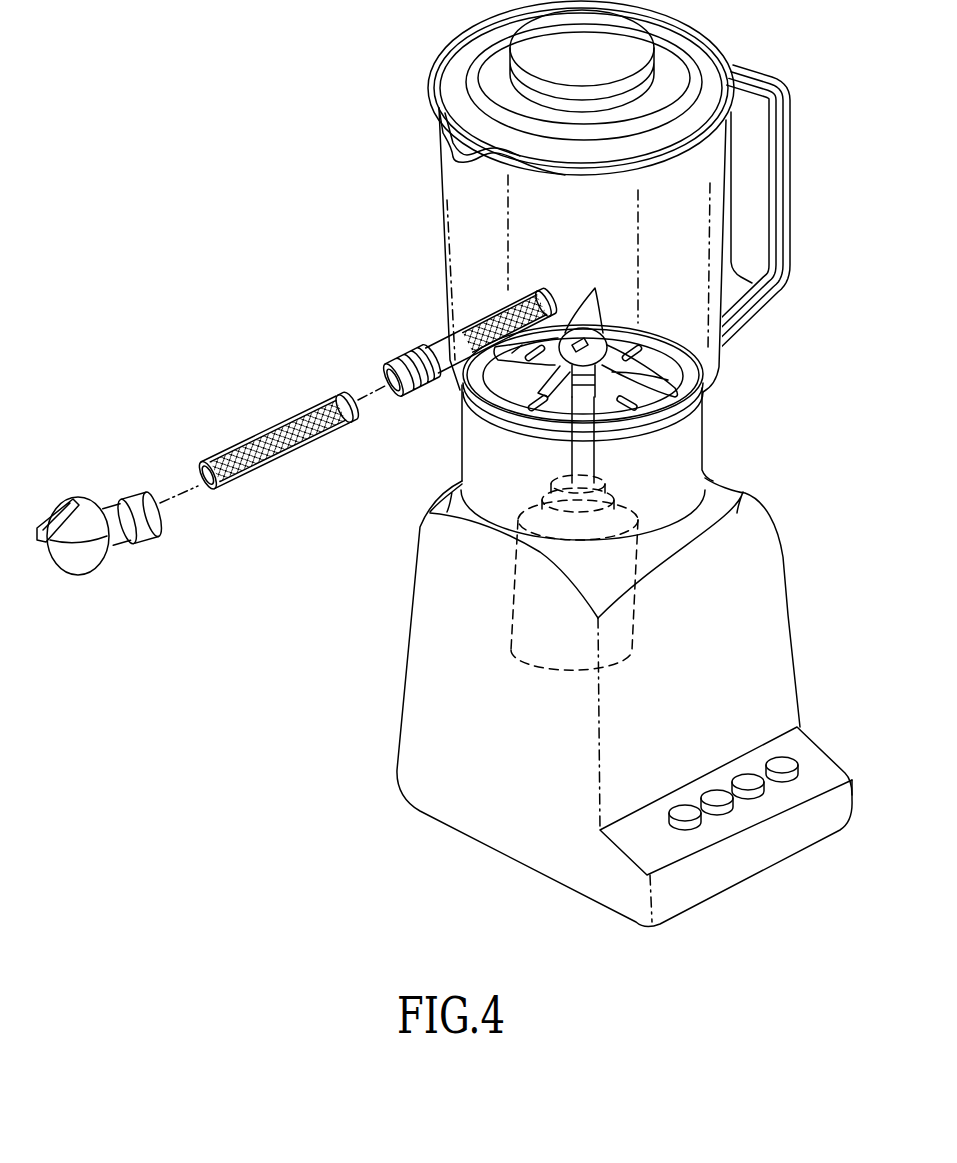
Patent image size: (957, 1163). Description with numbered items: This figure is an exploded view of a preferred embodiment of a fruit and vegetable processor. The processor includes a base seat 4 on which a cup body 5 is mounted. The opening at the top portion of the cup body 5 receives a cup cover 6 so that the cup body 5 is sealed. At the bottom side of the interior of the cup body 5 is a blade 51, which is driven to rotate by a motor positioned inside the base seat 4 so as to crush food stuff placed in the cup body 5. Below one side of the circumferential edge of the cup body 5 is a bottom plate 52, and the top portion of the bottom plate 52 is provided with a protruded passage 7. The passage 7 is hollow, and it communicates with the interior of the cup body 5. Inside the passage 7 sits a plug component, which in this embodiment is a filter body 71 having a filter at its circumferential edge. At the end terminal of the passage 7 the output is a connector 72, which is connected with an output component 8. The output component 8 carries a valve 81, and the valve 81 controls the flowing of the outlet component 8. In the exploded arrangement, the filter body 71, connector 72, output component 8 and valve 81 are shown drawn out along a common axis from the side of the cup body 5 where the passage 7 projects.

The base seat 4 is at (380, 680).
The cup body 5 is at (442, 222).
The cup cover 6 is at (500, 67).
The passage 7 is at (430, 328).
The filter body 71 is at (280, 427).
The connector 72 is at (420, 397).
The output component 8 is at (118, 457).
The valve 81 is at (65, 495).
The blade 51 is at (707, 375).
The bottom plate 52 is at (702, 428).